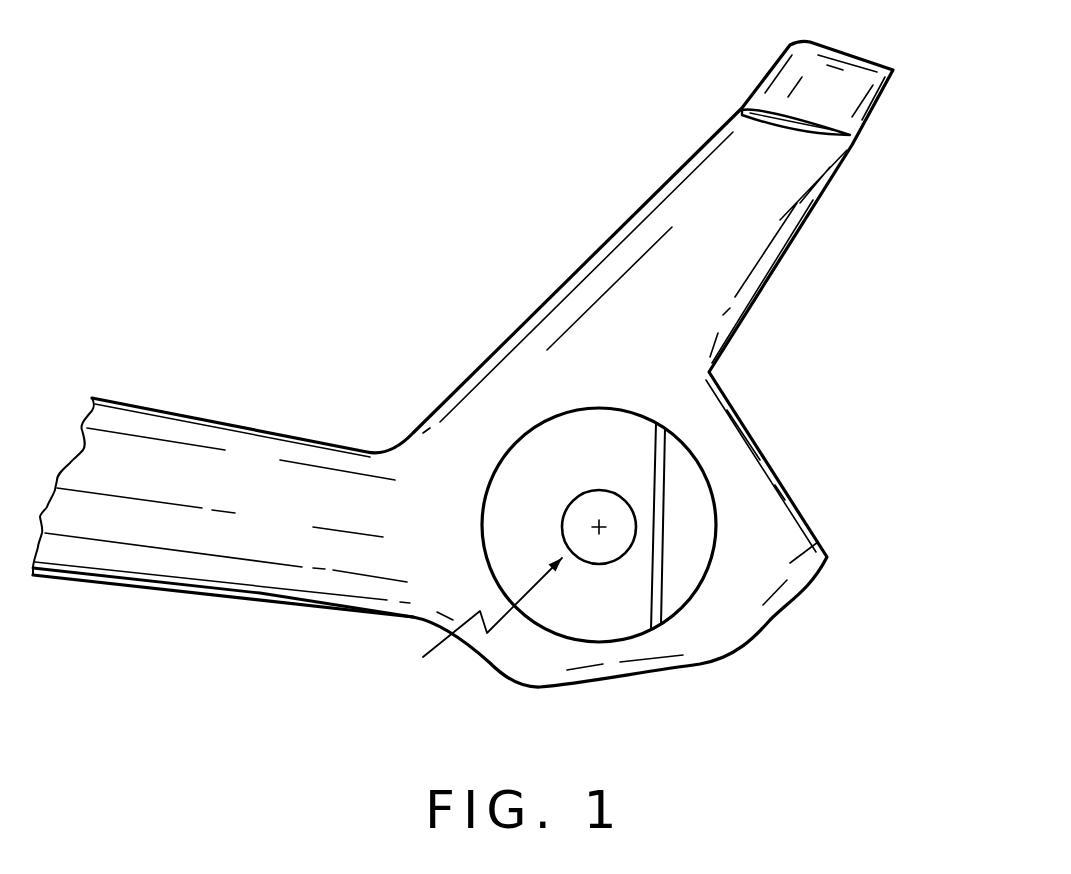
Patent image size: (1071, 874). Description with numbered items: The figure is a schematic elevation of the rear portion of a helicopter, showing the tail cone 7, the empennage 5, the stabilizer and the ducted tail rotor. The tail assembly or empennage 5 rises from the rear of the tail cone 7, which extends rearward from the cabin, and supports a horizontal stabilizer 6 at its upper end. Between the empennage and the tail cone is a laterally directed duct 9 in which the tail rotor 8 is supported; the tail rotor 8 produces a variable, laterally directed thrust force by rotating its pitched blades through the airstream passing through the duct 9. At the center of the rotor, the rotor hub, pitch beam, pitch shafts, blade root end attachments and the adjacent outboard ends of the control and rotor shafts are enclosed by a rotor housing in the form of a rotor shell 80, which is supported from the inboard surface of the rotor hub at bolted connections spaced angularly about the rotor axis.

The empennage 5 is at (700, 178).
The horizontal stabilizer 6 is at (758, 108).
The tail cone 7 is at (260, 445).
The tail rotor 8 is at (478, 622).
The duct 9 is at (687, 493).
The rotor shell 80 is at (607, 537).